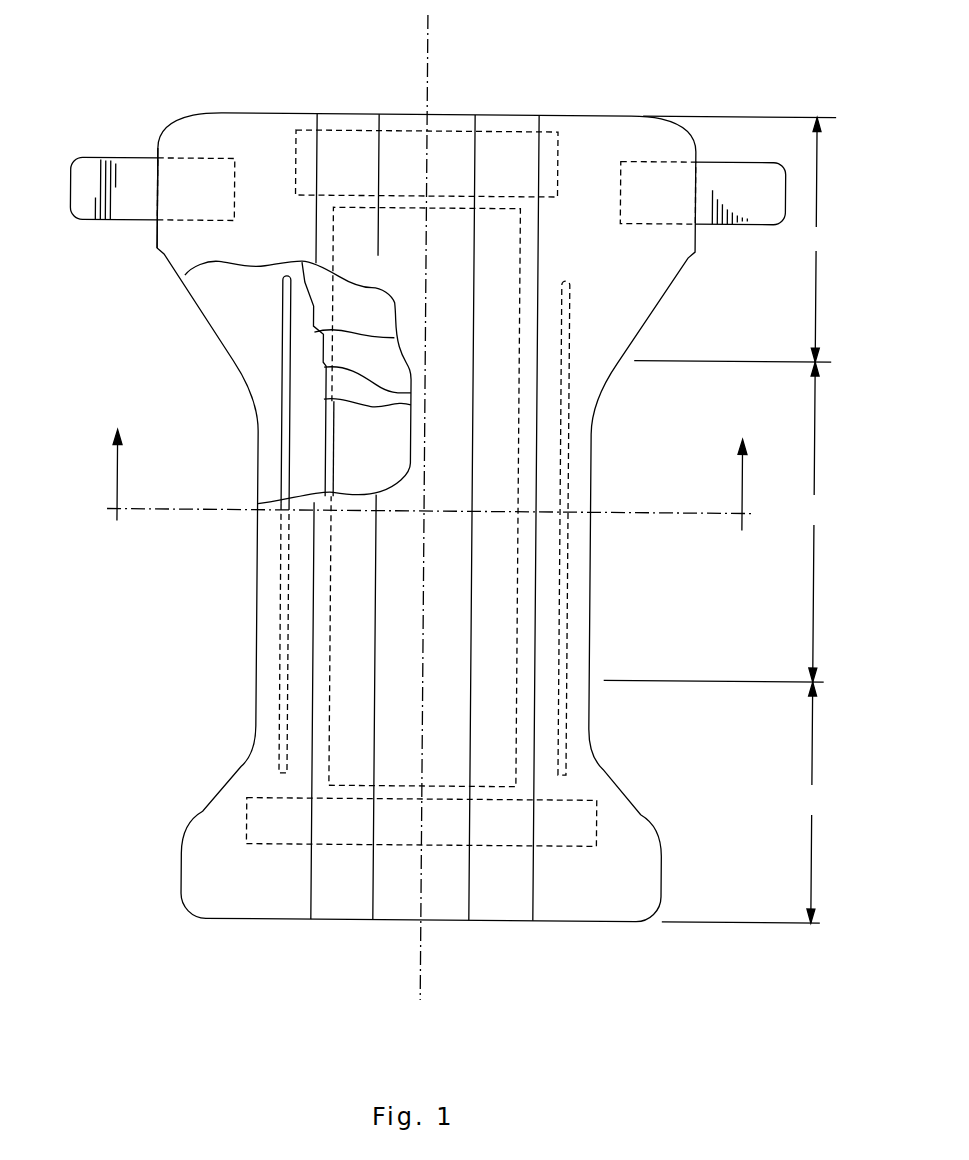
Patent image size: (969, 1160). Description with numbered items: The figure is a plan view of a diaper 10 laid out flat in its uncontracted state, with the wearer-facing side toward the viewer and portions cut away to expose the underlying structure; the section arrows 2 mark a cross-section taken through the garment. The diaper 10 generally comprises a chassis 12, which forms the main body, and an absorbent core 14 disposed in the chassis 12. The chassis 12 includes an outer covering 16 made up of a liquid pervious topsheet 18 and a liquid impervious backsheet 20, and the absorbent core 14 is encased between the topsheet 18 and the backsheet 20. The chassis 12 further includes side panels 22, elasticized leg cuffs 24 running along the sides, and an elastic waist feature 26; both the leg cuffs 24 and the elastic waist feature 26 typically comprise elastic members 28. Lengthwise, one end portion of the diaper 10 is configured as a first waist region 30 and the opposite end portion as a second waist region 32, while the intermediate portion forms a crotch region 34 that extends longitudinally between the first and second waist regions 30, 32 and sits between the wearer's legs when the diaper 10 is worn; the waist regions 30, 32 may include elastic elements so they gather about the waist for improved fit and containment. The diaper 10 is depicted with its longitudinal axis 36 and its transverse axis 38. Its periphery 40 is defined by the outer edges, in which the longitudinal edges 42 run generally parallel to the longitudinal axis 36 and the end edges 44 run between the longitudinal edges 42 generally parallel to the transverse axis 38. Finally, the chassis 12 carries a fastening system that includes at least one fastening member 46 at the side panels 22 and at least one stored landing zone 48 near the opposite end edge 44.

The diaper 10 is at (705, 84).
The chassis 12 is at (470, 633).
The absorbent core 14 is at (311, 426).
The outer covering 16 is at (183, 253).
The topsheet 18 is at (379, 643).
The backsheet 20 is at (208, 282).
The side panels 22 is at (240, 150).
The elasticized leg cuffs 24 is at (300, 584).
The elastic waist feature 26 is at (458, 148).
The elastic members 28 is at (382, 250).
The first waist region 30 is at (742, 802).
The second waist region 32 is at (735, 239).
The crotch region 34 is at (716, 521).
The longitudinal axis 36 is at (421, 968).
The transverse axis 38 is at (622, 512).
The periphery 40 is at (660, 300).
The longitudinal edges 42 is at (257, 702).
The end edges 44 is at (347, 113).
The fastening member 46 is at (137, 180).
The stored landing zone 48 is at (298, 827).
The section line 2 is at (431, 477).